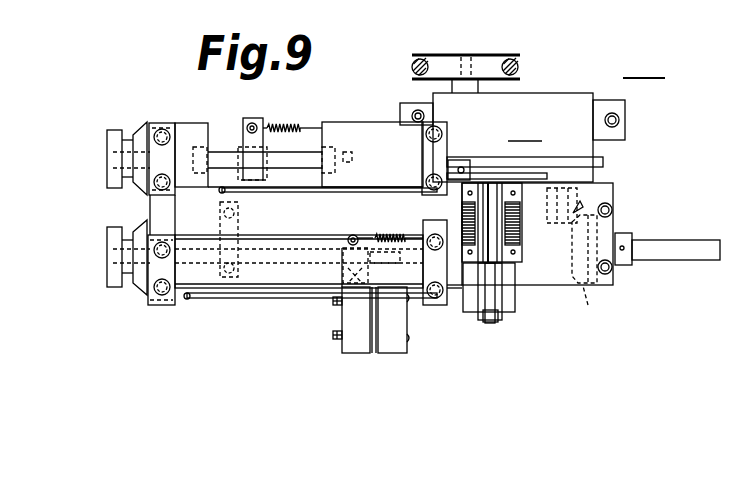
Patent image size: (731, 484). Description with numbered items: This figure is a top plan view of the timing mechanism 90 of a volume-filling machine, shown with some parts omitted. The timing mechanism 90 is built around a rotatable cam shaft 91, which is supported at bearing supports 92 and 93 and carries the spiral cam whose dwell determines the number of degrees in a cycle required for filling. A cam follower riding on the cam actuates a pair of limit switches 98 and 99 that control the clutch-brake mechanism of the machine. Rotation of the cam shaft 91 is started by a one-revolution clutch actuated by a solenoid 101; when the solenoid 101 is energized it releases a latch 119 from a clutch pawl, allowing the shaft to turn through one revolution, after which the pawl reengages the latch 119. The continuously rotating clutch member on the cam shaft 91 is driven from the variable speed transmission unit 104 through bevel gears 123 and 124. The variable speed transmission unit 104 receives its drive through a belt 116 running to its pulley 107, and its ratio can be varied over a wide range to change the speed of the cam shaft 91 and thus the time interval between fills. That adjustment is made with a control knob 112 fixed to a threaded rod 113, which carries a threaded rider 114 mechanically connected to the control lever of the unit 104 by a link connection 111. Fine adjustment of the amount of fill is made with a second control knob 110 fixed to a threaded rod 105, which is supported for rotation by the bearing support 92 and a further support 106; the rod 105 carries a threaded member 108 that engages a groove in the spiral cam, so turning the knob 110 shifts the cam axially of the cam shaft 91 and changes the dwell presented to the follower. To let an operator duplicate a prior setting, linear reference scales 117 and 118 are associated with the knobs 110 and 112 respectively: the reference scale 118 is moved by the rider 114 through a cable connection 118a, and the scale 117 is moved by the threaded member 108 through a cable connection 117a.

The timing mechanism 90 is at (644, 64).
The cam shaft 91 is at (669, 242).
The bearing support 92 is at (220, 217).
The bearing support 93 is at (617, 272).
The limit switch 98 is at (351, 354).
The limit switch 99 is at (399, 354).
The solenoid 101 is at (521, 250).
The variable speed transmission unit 104 is at (512, 137).
The threaded rod 105 is at (322, 258).
The support 106 is at (391, 271).
The pulley 107 is at (503, 54).
The threaded member 108 is at (335, 289).
The control knob 110 is at (109, 275).
The link connection 111 is at (461, 159).
The control knob 112 is at (110, 150).
The threaded rod 113 is at (340, 150).
The threaded rider 114 is at (244, 123).
The belt 116 is at (521, 67).
The linear reference scale 117 is at (150, 300).
The cable connection 117a is at (256, 298).
The reference scale 118 is at (148, 128).
The cable connection 118a is at (326, 192).
The latch 119 is at (493, 321).
The bevel gear 123 is at (573, 213).
The bevel gear 124 is at (593, 306).